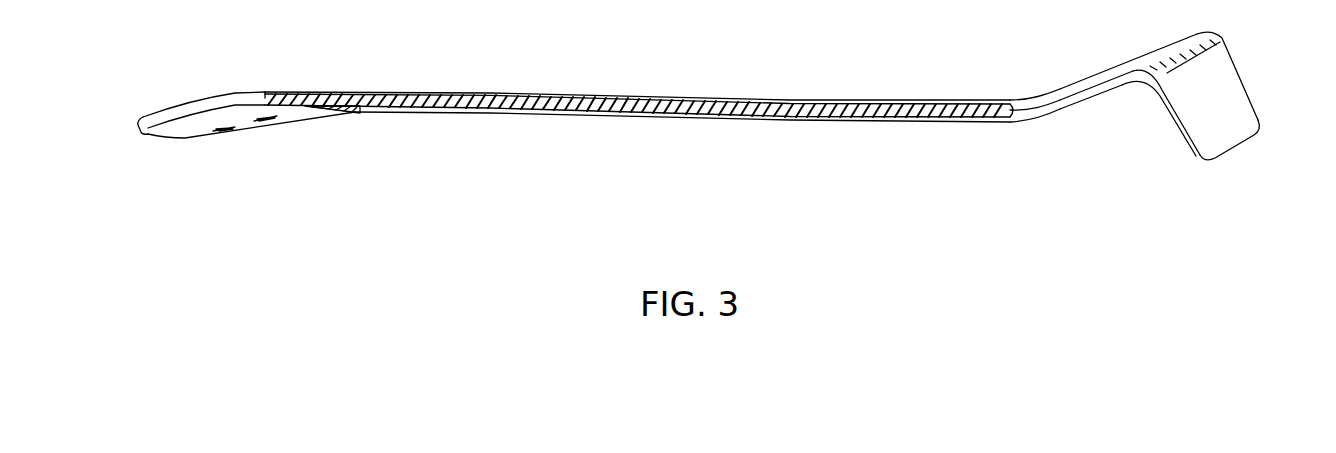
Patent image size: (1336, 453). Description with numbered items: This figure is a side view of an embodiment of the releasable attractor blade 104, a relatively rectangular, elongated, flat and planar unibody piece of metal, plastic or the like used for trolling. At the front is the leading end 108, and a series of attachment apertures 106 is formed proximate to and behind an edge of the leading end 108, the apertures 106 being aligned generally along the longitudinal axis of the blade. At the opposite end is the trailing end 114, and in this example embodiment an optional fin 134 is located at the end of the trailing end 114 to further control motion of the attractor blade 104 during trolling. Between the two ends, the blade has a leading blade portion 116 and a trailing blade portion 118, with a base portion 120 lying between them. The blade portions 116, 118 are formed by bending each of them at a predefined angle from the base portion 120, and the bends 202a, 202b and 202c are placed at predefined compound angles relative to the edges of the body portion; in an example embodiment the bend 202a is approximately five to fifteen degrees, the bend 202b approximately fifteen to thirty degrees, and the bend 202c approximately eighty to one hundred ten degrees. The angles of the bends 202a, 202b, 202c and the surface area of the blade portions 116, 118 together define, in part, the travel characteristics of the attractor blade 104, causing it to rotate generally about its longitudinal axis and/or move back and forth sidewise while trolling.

The attractor blade 104 is at (458, 52).
The attachment apertures 106 is at (258, 147).
The leading end 108 is at (140, 128).
The trailing end 114 is at (1234, 109).
The leading blade portion 116 is at (235, 92).
The trailing blade portion 118 is at (1111, 64).
The base portion 120 is at (712, 97).
The fin 134 is at (1236, 128).
The bend 202a is at (377, 129).
The bend 202b is at (1023, 83).
The bend 202c is at (1140, 100).